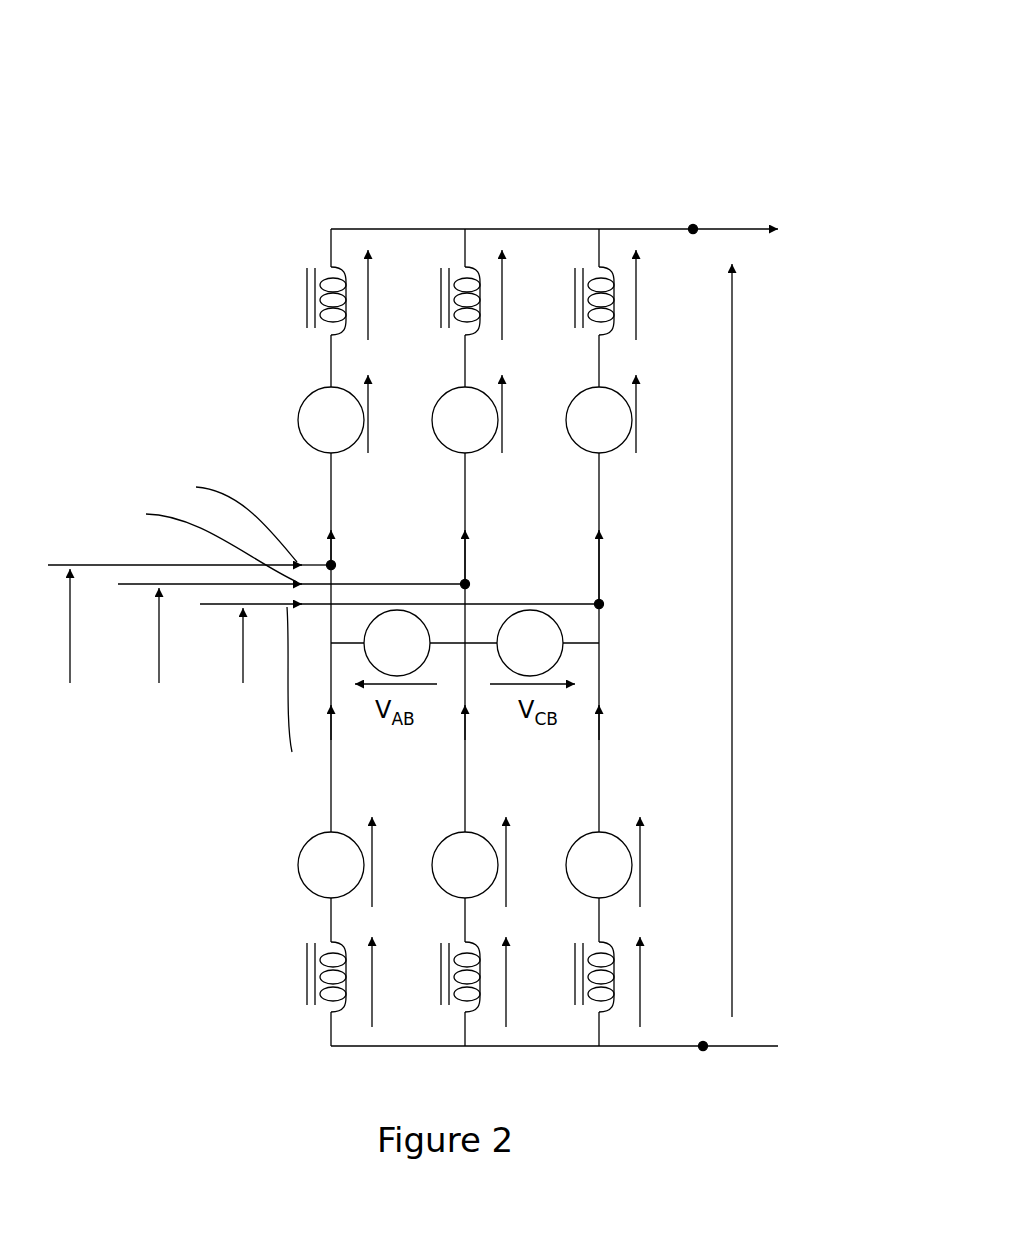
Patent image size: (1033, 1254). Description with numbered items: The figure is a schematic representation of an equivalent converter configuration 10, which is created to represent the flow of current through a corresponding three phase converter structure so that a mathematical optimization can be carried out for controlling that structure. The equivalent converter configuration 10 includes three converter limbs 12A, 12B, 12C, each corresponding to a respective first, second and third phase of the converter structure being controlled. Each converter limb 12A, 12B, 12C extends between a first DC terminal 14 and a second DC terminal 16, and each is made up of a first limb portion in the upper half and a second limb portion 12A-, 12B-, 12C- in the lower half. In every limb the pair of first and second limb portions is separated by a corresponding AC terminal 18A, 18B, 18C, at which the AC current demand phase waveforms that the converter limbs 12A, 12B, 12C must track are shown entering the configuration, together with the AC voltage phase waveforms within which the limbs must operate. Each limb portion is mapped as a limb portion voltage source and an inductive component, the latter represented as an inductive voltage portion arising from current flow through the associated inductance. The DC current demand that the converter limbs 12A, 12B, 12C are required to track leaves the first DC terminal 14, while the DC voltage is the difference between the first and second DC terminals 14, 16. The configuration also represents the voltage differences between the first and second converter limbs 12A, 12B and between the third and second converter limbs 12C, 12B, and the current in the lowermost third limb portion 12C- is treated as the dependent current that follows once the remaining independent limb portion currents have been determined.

The equivalent converter configuration 10 is at (235, 130).
The first converter limb 12A is at (337, 172).
The second converter limb 12B is at (475, 172).
The third converter limb 12C is at (603, 172).
The second limb portion 12A- is at (293, 852).
The second limb portion 12B- is at (441, 830).
The second limb portion 12C- is at (576, 830).
The first DC terminal 14 is at (693, 227).
The second DC terminal 16 is at (703, 1046).
The AC terminal 18A is at (331, 565).
The AC terminal 18B is at (465, 584).
The AC terminal 18C is at (599, 604).